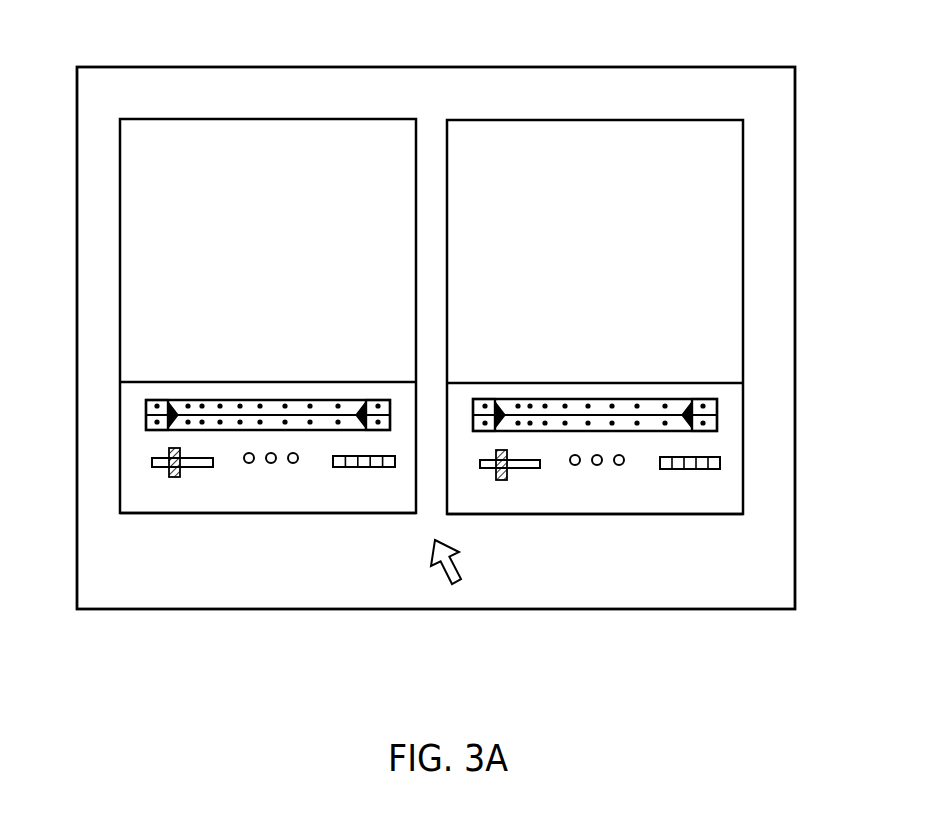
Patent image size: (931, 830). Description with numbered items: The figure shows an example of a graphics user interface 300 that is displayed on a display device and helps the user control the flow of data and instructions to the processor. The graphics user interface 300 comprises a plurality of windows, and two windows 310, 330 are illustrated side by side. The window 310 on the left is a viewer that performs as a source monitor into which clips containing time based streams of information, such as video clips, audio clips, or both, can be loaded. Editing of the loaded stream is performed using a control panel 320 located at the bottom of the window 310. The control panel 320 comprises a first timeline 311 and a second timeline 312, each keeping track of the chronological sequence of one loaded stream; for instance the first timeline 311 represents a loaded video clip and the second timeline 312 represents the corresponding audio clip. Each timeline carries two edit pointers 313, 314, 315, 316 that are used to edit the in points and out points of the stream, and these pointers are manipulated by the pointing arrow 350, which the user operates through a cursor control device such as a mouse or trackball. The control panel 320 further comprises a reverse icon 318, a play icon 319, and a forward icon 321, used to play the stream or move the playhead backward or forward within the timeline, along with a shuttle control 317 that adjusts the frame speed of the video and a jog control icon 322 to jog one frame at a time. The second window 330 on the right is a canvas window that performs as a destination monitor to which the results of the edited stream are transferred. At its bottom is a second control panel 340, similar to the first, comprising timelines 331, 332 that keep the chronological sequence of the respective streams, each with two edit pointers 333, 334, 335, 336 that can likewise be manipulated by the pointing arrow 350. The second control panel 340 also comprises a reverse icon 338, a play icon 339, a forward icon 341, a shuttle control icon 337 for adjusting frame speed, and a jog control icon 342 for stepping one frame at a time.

The graphics user interface 300 is at (735, 67).
The window 310 is at (120, 162).
The first timeline 311 is at (265, 400).
The second timeline 312 is at (232, 418).
The edit pointer 313 is at (170, 405).
The edit pointer 314 is at (362, 400).
The edit pointer 315 is at (358, 425).
The edit pointer 316 is at (163, 432).
The shuttle control 317 is at (197, 467).
The reverse icon 318 is at (249, 463).
The play icon 319 is at (271, 463).
The control panel 320 is at (170, 513).
The forward icon 321 is at (293, 463).
The jog control icon 322 is at (373, 467).
The second window 330 is at (517, 119).
The timeline 331 is at (630, 405).
The timeline 332 is at (653, 422).
The edit pointer 333 is at (499, 402).
The edit pointer 334 is at (692, 402).
The edit pointer 335 is at (520, 410).
The edit pointer 336 is at (688, 428).
The shuttle control icon 337 is at (528, 468).
The reverse icon 338 is at (575, 465).
The play icon 339 is at (597, 465).
The second control panel 340 is at (733, 514).
The forward icon 341 is at (619, 465).
The jog control icon 342 is at (698, 469).
The pointing arrow 350 is at (450, 582).